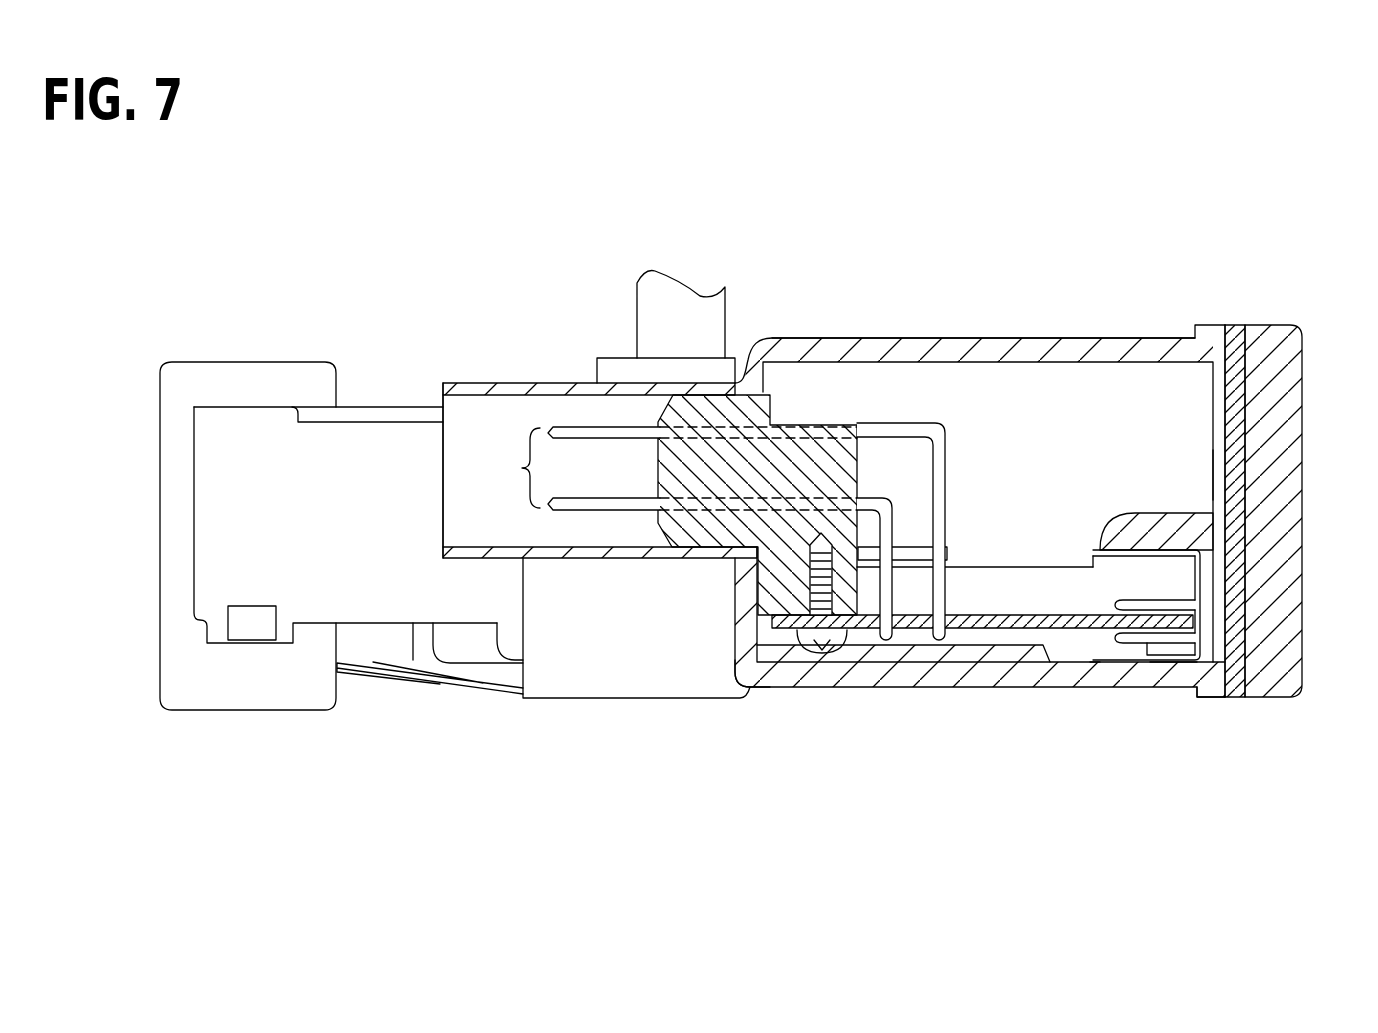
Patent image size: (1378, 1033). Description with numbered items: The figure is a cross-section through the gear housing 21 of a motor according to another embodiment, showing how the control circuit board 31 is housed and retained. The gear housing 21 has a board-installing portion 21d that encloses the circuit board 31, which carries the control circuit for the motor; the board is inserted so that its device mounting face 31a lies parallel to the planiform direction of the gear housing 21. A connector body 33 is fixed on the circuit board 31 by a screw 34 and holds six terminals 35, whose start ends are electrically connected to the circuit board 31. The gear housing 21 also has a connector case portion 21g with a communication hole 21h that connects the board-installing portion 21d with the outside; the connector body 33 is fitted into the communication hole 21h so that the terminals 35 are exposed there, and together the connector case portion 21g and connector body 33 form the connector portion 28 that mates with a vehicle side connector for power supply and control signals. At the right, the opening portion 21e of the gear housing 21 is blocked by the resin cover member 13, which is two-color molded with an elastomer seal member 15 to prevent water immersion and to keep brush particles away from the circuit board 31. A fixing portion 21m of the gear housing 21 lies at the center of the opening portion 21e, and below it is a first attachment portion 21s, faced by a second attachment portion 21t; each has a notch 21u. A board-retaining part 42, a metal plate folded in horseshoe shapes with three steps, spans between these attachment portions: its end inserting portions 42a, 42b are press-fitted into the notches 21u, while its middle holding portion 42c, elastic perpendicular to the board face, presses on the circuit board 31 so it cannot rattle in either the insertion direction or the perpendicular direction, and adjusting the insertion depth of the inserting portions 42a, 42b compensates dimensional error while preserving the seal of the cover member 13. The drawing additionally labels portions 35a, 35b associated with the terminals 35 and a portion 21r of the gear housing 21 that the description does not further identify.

The cover member 13 is at (1302, 362).
The seal member 15 is at (1236, 331).
The gear housing 21 is at (381, 407).
The board-installing portion 21d is at (1078, 377).
The opening portion of gear housing 21e is at (1230, 648).
The connector case portion 21g is at (497, 383).
The communication hole 21h is at (467, 547).
The fixing portion 21m is at (1247, 481).
The rounded corner of casing 21r is at (790, 690).
The first attachment portion 21s is at (1185, 550).
The second attachment portion 21t is at (1173, 655).
The notch 21u is at (1100, 550).
The connector portion 28 is at (577, 378).
The circuit board 31 is at (975, 632).
The device mounting face 31a is at (1020, 598).
The connector body 33 is at (773, 405).
The screw 34 is at (833, 655).
The terminals 35 is at (669, 528).
The terminal leads 35a is at (945, 456).
The terminal pins 35b is at (610, 440).
The board-retaining part 42 is at (1197, 602).
The inserting portion 42a is at (1150, 553).
The inserting portion 42b is at (1147, 650).
The holding portion 42c is at (1120, 603).